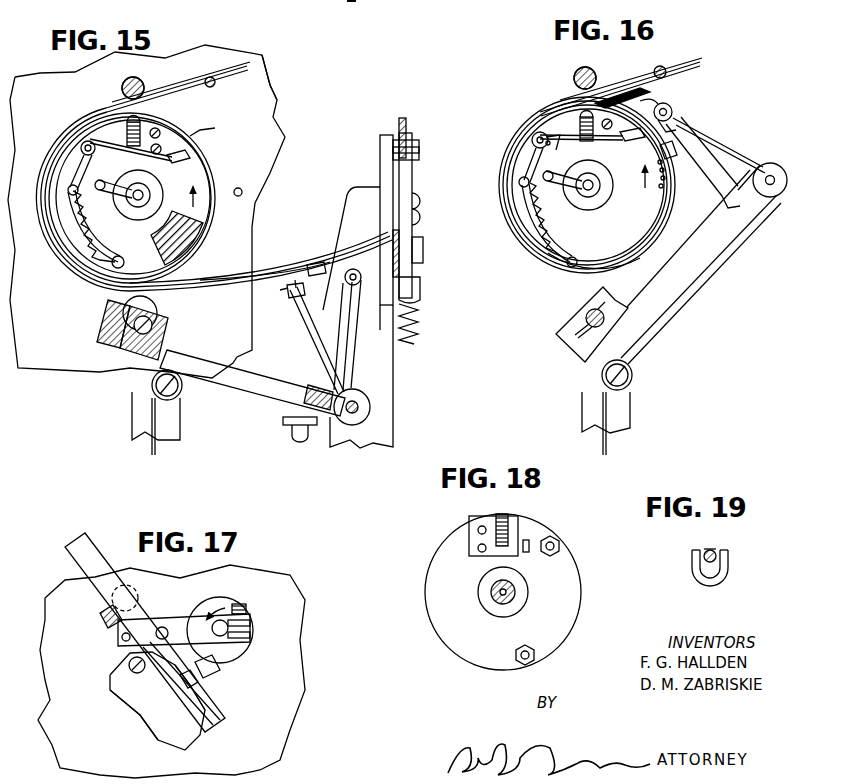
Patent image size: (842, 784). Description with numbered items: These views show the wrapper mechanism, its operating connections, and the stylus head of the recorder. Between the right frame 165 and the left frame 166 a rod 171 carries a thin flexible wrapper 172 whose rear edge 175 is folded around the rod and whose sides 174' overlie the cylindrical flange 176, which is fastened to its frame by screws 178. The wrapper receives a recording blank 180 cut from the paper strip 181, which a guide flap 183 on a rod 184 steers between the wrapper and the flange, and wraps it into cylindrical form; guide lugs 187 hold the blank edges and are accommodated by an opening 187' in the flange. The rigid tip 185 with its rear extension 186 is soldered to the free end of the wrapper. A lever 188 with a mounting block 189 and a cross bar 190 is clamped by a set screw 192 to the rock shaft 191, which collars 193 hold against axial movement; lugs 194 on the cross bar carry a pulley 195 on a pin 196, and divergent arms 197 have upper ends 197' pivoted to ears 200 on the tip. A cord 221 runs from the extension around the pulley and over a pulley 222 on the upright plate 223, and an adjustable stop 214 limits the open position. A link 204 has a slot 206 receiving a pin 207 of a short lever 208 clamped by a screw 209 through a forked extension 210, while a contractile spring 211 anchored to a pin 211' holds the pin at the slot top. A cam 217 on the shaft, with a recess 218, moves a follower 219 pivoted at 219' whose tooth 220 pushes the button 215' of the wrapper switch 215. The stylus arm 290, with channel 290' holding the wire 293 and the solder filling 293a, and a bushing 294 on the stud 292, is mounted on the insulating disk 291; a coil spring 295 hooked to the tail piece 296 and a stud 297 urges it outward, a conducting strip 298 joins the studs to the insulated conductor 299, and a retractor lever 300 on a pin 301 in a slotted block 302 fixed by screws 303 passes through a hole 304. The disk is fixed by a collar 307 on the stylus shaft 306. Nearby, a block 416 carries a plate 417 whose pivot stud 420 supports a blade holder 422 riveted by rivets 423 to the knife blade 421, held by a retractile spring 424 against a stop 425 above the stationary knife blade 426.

In FIG. 15, the right frame 165 is at (268, 86).
In FIG. 17, the left frame 166 is at (290, 700).
In FIG. 15, the rod 171 is at (124, 82).
In FIG. 16, the rod 171 is at (575, 78).
In FIG. 15, the wrapper 172 is at (84, 120).
In FIG. 15, the sides of the wrapper 174' is at (259, 280).
In FIG. 16, the sides of the wrapper 174' is at (577, 185).
In FIG. 15, the rear edge of the wrapper 175 is at (143, 78).
In FIG. 16, the rear edge of the wrapper 175 is at (596, 70).
In FIG. 15, the cylindrical flange 176 is at (190, 253).
In FIG. 16, the cylindrical flange 176 is at (653, 238).
In FIG. 15, the screws 178 is at (244, 194).
In FIG. 15, the recording blank 180 is at (260, 275).
In FIG. 16, the recording blank 180 is at (598, 268).
In FIG. 15, the paper strip 181 is at (245, 85).
In FIG. 16, the paper strip 181 is at (697, 63).
In FIG. 15, the guide flap 183 is at (185, 96).
In FIG. 16, the guide flap 183 is at (632, 86).
In FIG. 15, the rod 184 is at (212, 76).
In FIG. 16, the rod 184 is at (660, 68).
In FIG. 15, the tip 185 is at (372, 290).
In FIG. 16, the tip 185 is at (655, 101).
In FIG. 15, the rear extension 186 is at (293, 298).
In FIG. 16, the rear extension 186 is at (730, 131).
In FIG. 15, the guide lugs 187 is at (314, 260).
In FIG. 16, the guide lugs 187 is at (686, 166).
In FIG. 15, the opening 187' is at (226, 125).
In FIG. 15, the lever 188 is at (258, 388).
In FIG. 16, the lever 188 is at (708, 244).
In FIG. 15, the mounting block 189 is at (133, 357).
In FIG. 16, the mounting block 189 is at (578, 358).
In FIG. 15, the cross bar 190 is at (317, 383).
In FIG. 15, the rock shaft 191 is at (165, 337).
In FIG. 16, the rock shaft 191 is at (583, 310).
In FIG. 17, the rock shaft 191 is at (240, 655).
In FIG. 15, the set screw 192 is at (100, 327).
In FIG. 15, the collars 193 is at (158, 298).
In FIG. 16, the lugs 194 is at (778, 199).
In FIG. 15, the pulley 195 is at (372, 405).
In FIG. 16, the pulley 195 is at (778, 167).
In FIG. 15, the pin 196 is at (351, 420).
In FIG. 16, the pin 196 is at (760, 217).
In FIG. 15, the arms 197 is at (363, 336).
In FIG. 16, the arms 197 is at (703, 164).
In FIG. 15, the upper ends of the arms 197' is at (340, 248).
In FIG. 16, the upper ends of the arms 197' is at (694, 122).
In FIG. 15, the ears 200 is at (360, 266).
In FIG. 16, the ears 200 is at (673, 111).
In FIG. 17, the link 204 is at (82, 555).
In FIG. 17, the slot 206 is at (180, 677).
In FIG. 17, the pin 207 is at (165, 625).
In FIG. 17, the short lever 208 is at (125, 648).
In FIG. 17, the screw 209 is at (240, 606).
In FIG. 17, the forked extension 210 is at (252, 630).
In FIG. 17, the contractile spring 211 is at (92, 622).
In FIG. 17, the pin 211' is at (96, 646).
In FIG. 15, the adjustable stop 214 is at (287, 417).
In FIG. 17, the wrapper switch 215 is at (132, 715).
In FIG. 17, the switch button 215' is at (214, 697).
In FIG. 17, the cam 217 is at (230, 606).
In FIG. 17, the recess 218 is at (205, 668).
In FIG. 17, the follower 219 is at (181, 683).
In FIG. 17, the follower pivot 219' is at (95, 602).
In FIG. 17, the rounded tooth 220 is at (200, 690).
In FIG. 15, the cord 221 is at (310, 323).
In FIG. 16, the cord 221 is at (657, 320).
In FIG. 15, the pulley 222 is at (182, 388).
In FIG. 16, the pulley 222 is at (633, 375).
In FIG. 15, the upright plate 223 is at (138, 421).
In FIG. 16, the upright plate 223 is at (625, 417).
In FIG. 15, the stylus arm 290 is at (178, 187).
In FIG. 16, the stylus arm 290 is at (561, 148).
In FIG. 19, the stylus arm 290 is at (695, 576).
In FIG. 19, the channel 290' is at (675, 560).
In FIG. 15, the insulating disk 291 is at (203, 150).
In FIG. 16, the insulating disk 291 is at (615, 270).
In FIG. 18, the insulating disk 291 is at (565, 620).
In FIG. 15, the stud 292 is at (83, 119).
In FIG. 16, the stud 292 is at (530, 137).
In FIG. 18, the stud 292 is at (558, 542).
In FIG. 15, the wire 293 is at (190, 136).
In FIG. 16, the wire 293 is at (631, 158).
In FIG. 19, the wire 293 is at (728, 572).
In FIG. 19, the lug 293a is at (702, 548).
In FIG. 16, the bushing 294 is at (545, 148).
In FIG. 15, the coil spring 295 is at (93, 240).
In FIG. 16, the coil spring 295 is at (530, 190).
In FIG. 15, the tail piece 296 is at (75, 140).
In FIG. 16, the tail piece 296 is at (527, 165).
In FIG. 15, the stud 297 is at (117, 265).
In FIG. 16, the stud 297 is at (570, 262).
In FIG. 18, the stud 297 is at (520, 666).
In FIG. 15, the conducting strip 298 is at (96, 252).
In FIG. 16, the conducting strip 298 is at (540, 210).
In FIG. 15, the insulated conductor 299 is at (105, 182).
In FIG. 16, the insulated conductor 299 is at (569, 198).
In FIG. 18, the insulated conductor 299 is at (493, 588).
In FIG. 15, the lever 300 is at (143, 123).
In FIG. 16, the lever 300 is at (575, 112).
In FIG. 18, the lever 300 is at (505, 518).
In FIG. 18, the pin 301 is at (527, 552).
In FIG. 18, the slotted block 302 is at (470, 548).
In FIG. 15, the screws 303 is at (160, 136).
In FIG. 16, the screws 303 is at (607, 124).
In FIG. 18, the screws 303 is at (480, 528).
In FIG. 15, the hole 304 is at (118, 131).
In FIG. 16, the hole 304 is at (573, 126).
In FIG. 15, the stylus shaft 306 is at (140, 206).
In FIG. 16, the stylus shaft 306 is at (606, 186).
In FIG. 18, the stylus shaft 306 is at (492, 600).
In FIG. 16, the collar 307 is at (604, 200).
In FIG. 18, the collar 307 is at (517, 604).
In FIG. 15, the block 416 is at (387, 373).
In FIG. 15, the plate 417 is at (379, 172).
In FIG. 15, the pivot stud 420 is at (423, 252).
In FIG. 15, the knife blade 421 is at (399, 117).
In FIG. 15, the blade holder 422 is at (415, 178).
In FIG. 15, the rivets 423 is at (425, 218).
In FIG. 15, the retractile spring 424 is at (417, 332).
In FIG. 15, the stop 425 is at (413, 138).
In FIG. 15, the stationary knife blade 426 is at (413, 270).